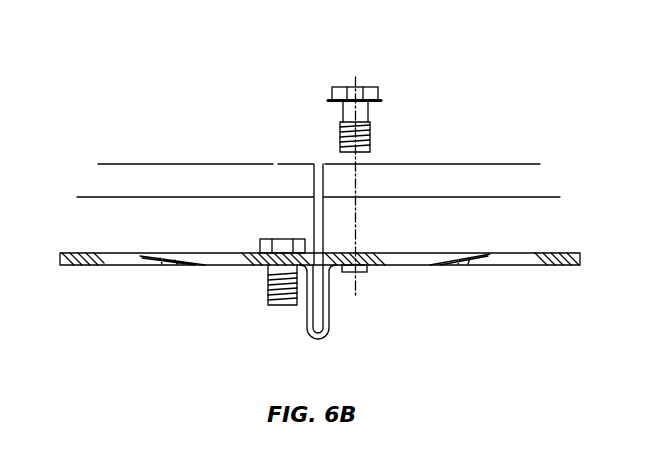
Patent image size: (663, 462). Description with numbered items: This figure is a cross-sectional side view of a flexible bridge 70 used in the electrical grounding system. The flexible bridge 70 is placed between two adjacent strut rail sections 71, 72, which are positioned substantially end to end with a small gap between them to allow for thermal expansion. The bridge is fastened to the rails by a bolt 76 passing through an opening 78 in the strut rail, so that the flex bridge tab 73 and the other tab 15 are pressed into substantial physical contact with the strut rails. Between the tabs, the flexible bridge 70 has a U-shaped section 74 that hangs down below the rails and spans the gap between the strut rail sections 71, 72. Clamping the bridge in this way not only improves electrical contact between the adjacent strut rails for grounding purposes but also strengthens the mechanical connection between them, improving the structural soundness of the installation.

The base plate 15 is at (462, 254).
The flexible bridge 70 is at (222, 267).
The strut rail section 71 is at (205, 164).
The strut rail section 72 is at (433, 164).
The flex bridge tab 73 is at (170, 253).
The U-shaped section 74 is at (322, 338).
The bolt 76 is at (360, 84).
The opening 78 is at (358, 253).